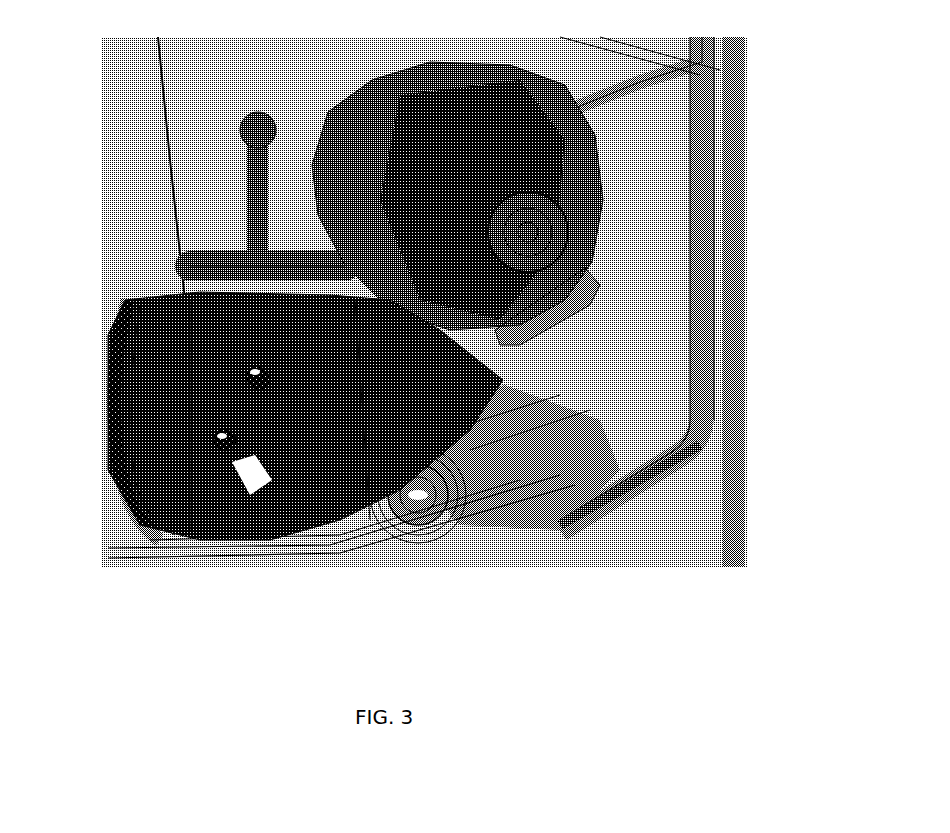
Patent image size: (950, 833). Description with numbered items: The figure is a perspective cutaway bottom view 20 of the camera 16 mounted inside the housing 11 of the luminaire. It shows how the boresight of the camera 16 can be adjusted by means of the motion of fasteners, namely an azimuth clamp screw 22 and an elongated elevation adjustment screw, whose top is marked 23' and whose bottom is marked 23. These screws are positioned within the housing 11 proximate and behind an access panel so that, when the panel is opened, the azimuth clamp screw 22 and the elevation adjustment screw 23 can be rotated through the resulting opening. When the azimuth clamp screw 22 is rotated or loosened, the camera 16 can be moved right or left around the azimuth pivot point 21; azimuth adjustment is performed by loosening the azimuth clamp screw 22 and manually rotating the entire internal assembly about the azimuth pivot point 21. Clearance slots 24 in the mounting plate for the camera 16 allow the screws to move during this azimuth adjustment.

The housing 11 is at (748, 375).
The camera 16 is at (570, 226).
The perspective cutaway bottom view 20 is at (767, 212).
The azimuth pivot point 21 is at (433, 358).
The azimuth clamp screw 22 is at (180, 527).
The elevation adjustment screw 23 is at (267, 531).
The top of the elongated elevation adjustment screw 23' is at (182, 141).
The clearance slots 24 is at (258, 395).